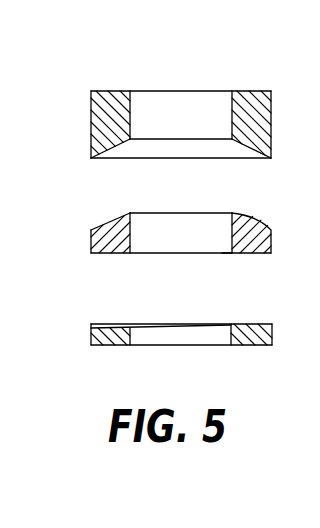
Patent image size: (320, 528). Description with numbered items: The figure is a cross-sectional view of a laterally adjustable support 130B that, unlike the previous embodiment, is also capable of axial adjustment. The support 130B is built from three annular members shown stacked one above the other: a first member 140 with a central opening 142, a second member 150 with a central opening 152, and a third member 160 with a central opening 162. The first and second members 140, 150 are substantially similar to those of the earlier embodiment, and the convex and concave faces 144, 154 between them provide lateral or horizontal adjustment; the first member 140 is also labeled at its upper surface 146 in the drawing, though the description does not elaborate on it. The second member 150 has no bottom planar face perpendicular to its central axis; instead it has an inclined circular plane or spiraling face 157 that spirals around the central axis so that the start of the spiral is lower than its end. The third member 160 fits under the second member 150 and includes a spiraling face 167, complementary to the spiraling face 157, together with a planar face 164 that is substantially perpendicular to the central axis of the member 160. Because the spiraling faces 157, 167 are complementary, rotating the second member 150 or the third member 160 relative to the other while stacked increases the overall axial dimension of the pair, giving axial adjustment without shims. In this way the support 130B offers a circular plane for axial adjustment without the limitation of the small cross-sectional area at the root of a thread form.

The laterally adjustable support 130B is at (220, 53).
The first annular member 140 is at (89, 121).
The central opening of first member 142 is at (238, 140).
The convex face 144 is at (108, 158).
The top surface of first ring 146 is at (108, 91).
The second annular member 150 is at (89, 234).
The central opening of second member 152 is at (235, 252).
The concave face 154 is at (105, 216).
The spiraling face of second member 157 is at (108, 253).
The third annular member 160 is at (89, 338).
The central opening of third member 162 is at (227, 346).
The planar face 164 is at (108, 346).
The spiraling face of third member 167 is at (108, 325).